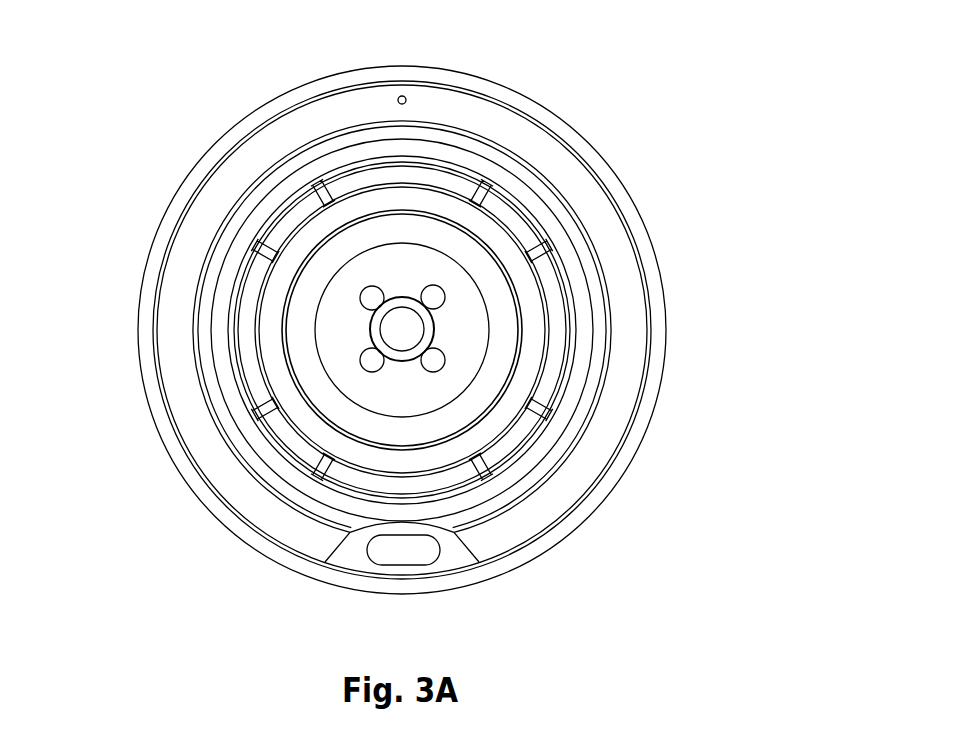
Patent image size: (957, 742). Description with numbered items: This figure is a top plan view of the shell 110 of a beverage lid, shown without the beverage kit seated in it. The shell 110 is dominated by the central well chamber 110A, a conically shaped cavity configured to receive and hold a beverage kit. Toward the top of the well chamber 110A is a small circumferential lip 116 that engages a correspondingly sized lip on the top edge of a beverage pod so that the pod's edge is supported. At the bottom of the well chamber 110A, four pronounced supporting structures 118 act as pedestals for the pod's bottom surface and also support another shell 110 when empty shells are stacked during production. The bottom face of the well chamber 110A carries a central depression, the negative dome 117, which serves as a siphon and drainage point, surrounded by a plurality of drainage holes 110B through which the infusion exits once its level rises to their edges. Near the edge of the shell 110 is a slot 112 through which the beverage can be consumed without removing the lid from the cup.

The shell 110 is at (627, 343).
The well chamber 110A is at (297, 427).
The drainage holes 110B is at (438, 297).
The slot 112 is at (412, 547).
The circumferential lip 116 is at (277, 200).
The negative dome 117 is at (412, 323).
The supporting structures 118 is at (435, 175).